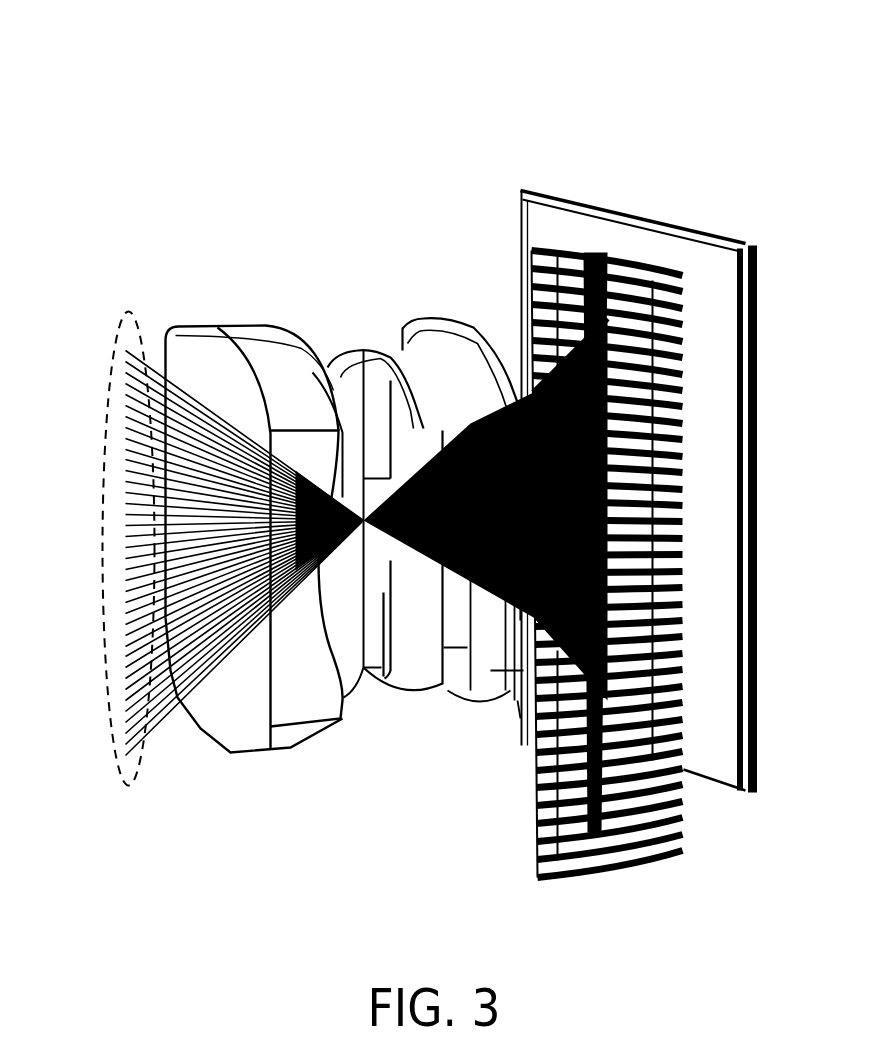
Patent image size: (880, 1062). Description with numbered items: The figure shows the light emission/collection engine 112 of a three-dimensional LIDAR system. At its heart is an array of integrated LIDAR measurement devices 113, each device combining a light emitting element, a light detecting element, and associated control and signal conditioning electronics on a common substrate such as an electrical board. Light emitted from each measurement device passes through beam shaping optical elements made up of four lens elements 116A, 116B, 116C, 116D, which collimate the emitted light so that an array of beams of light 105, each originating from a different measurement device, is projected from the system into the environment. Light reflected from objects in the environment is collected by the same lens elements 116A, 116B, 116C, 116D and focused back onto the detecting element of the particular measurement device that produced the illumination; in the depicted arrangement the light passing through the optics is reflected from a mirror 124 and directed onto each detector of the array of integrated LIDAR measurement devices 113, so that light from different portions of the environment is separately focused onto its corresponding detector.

The light emission/collection engine 112 is at (98, 91).
The array of beams of light 105 is at (112, 356).
The lens element 116A is at (224, 342).
The lens element 116B is at (316, 356).
The lens element 116C is at (380, 352).
The lens element 116D is at (449, 320).
The mirror 124 is at (588, 230).
The array of integrated LIDAR measurement devices 113 is at (695, 277).